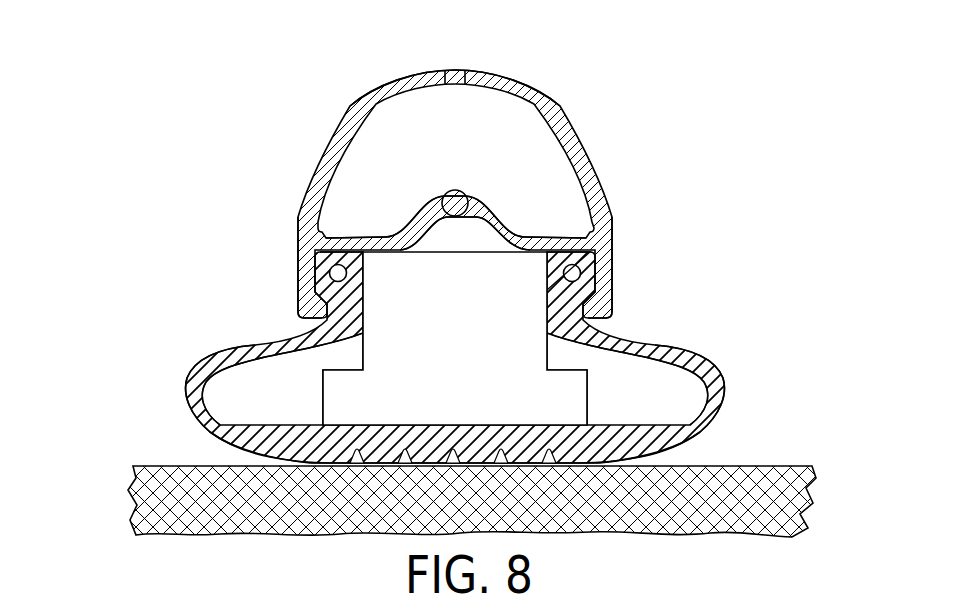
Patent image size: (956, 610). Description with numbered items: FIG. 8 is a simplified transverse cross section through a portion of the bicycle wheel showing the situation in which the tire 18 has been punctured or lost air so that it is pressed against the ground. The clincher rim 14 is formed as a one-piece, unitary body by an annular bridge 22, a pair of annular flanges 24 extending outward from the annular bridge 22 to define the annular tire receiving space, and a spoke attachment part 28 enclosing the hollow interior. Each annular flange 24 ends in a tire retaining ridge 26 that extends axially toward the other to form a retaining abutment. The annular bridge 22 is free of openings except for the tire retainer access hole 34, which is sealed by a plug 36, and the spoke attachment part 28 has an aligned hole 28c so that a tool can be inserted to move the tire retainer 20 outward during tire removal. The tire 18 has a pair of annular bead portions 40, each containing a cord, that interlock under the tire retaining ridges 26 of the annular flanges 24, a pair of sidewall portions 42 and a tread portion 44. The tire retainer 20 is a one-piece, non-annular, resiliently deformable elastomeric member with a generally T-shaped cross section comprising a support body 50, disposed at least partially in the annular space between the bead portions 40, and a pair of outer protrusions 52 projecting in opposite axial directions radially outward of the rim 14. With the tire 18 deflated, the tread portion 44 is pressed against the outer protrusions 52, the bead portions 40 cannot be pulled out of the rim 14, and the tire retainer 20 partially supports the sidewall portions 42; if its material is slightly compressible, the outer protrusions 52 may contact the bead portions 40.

The clincher rim 14 is at (298, 206).
The tire 18 is at (184, 419).
The tire retainer 20 is at (596, 402).
The annular bridge 22 is at (508, 222).
The annular flanges 24 is at (298, 252).
The tire retaining ridge 26 is at (298, 318).
The spoke attachment part 28 is at (574, 127).
The hole 28c is at (456, 70).
The tire retainer access hole 34 is at (440, 200).
The plug 36 is at (453, 190).
The annular bead portions 40 is at (312, 283).
The sidewall portions 42 is at (186, 391).
The tread portion 44 is at (377, 466).
The support body 50 is at (468, 340).
The outer protrusions 52 is at (323, 386).